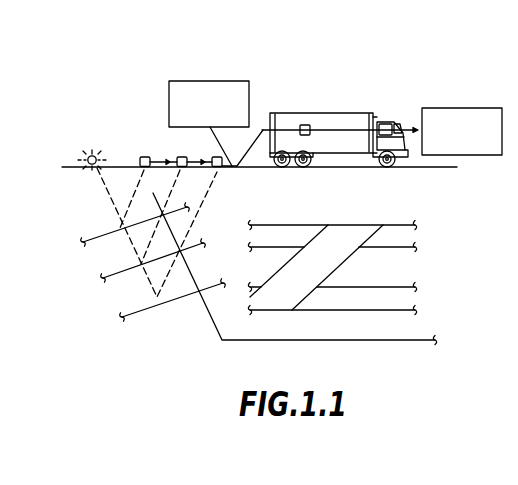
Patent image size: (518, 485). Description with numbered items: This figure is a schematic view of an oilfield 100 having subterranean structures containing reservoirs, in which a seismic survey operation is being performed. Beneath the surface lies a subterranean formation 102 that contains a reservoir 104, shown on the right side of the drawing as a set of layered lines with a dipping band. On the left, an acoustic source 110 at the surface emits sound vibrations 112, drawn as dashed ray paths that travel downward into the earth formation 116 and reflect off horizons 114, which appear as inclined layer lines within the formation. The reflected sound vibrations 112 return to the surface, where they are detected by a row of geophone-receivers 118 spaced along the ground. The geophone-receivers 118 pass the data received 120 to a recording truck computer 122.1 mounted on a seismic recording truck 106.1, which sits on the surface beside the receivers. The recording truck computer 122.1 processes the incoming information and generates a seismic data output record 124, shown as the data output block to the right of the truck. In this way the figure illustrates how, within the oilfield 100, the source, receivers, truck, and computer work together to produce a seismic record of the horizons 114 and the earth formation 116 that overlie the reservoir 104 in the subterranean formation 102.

The oilfield 100 is at (452, 88).
The subterranean formation 102 is at (396, 217).
The reservoir 104 is at (399, 275).
The seismic recording truck 106.1 is at (366, 113).
The acoustic source 110 is at (89, 154).
The sound vibrations 112 is at (134, 199).
The horizons 114 is at (97, 238).
The earth formation 116 is at (209, 315).
The geophone-receivers 118 is at (216, 157).
The data received 120 is at (193, 81).
The recording truck computer 122.1 is at (310, 125).
The seismic data output record 124 is at (473, 108).